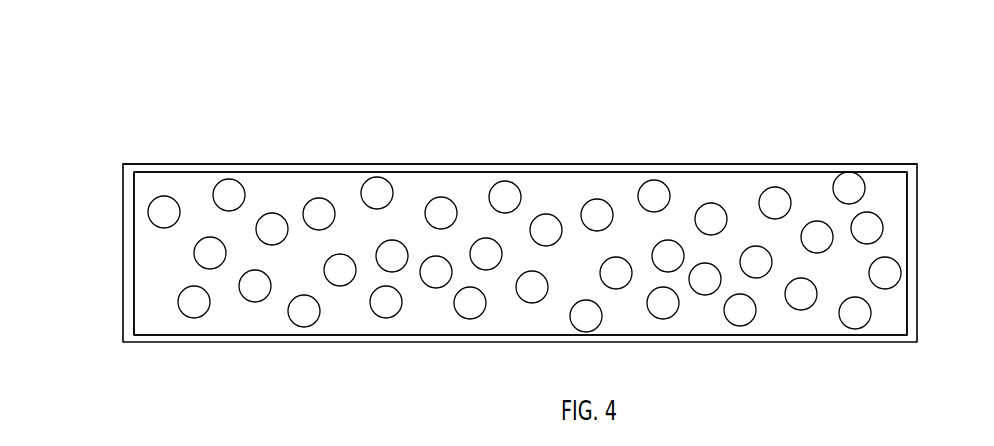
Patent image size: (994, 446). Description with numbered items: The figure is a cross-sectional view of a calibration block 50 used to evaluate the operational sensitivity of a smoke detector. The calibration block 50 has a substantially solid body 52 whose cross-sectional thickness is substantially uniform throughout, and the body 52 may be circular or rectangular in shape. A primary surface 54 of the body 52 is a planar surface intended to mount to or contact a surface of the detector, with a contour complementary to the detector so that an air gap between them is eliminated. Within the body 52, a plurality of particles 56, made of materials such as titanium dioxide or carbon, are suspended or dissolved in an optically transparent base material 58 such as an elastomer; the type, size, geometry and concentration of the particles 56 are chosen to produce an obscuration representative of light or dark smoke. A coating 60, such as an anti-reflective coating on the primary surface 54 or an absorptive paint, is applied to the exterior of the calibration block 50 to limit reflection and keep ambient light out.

The calibration block 50 is at (97, 97).
The body 52 is at (917, 210).
The primary surface 54 is at (322, 164).
The particles 56 is at (440, 287).
The base material 58 is at (563, 192).
The coating 60 is at (134, 285).